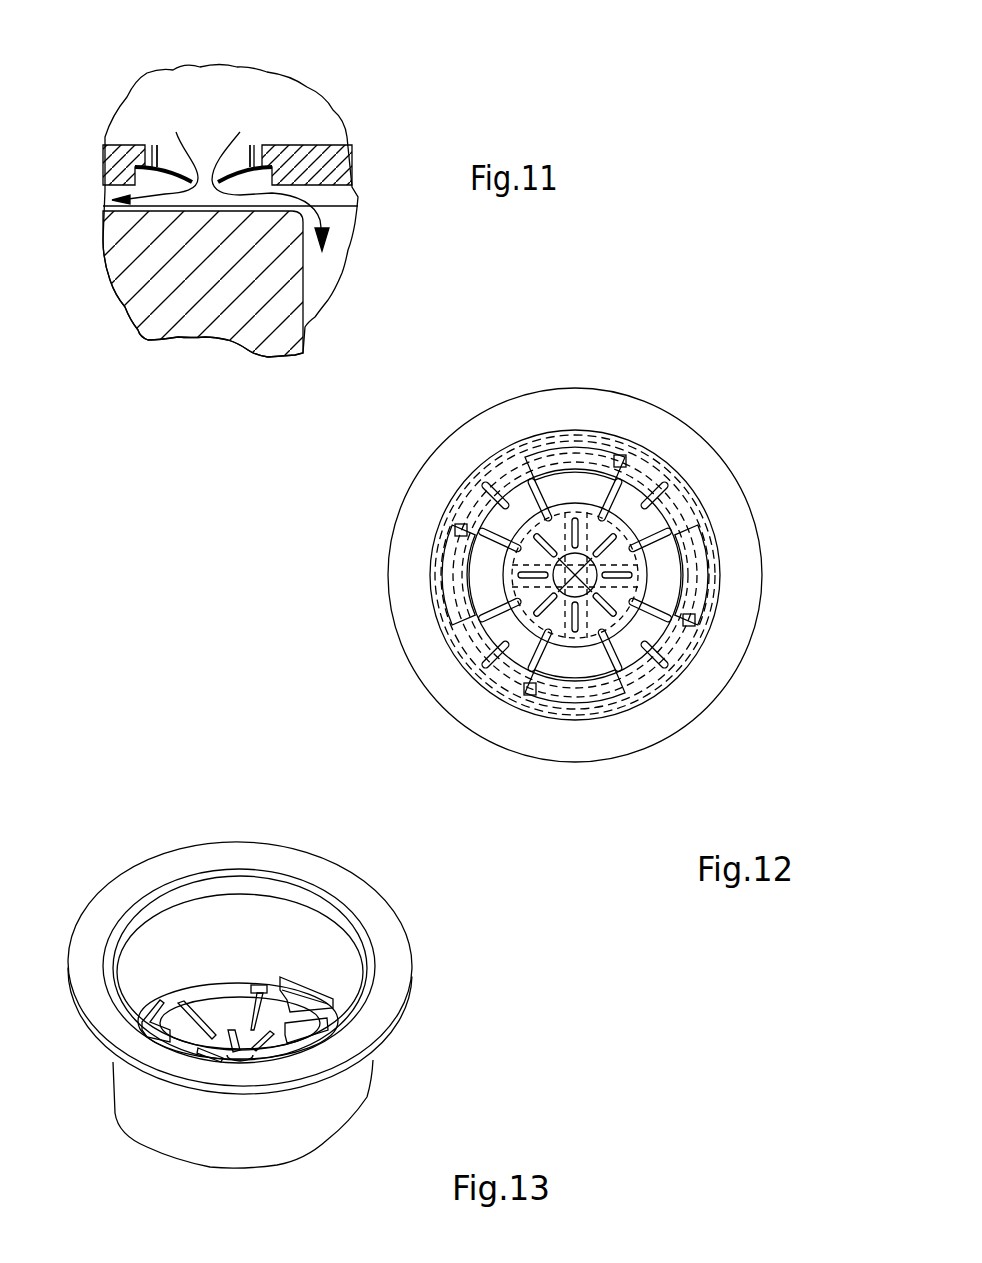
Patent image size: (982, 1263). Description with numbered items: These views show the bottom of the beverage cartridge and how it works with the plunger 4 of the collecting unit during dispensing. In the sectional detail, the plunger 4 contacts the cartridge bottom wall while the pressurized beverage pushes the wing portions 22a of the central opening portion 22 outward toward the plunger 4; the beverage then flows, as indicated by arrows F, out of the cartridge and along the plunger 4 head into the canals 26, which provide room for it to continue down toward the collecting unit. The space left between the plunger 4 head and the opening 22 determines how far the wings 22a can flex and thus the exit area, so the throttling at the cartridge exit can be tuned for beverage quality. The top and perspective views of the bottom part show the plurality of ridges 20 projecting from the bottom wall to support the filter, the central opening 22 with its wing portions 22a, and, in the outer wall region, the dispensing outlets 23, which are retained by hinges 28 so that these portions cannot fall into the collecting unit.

In FIG. 11, the plunger 4 is at (205, 320).
In FIG. 12, the ridges 20 is at (643, 472).
In FIG. 13, the ridges 20 is at (300, 977).
In FIG. 11, the central opening portion 22 is at (172, 176).
In FIG. 12, the central opening portion 22 is at (500, 620).
In FIG. 13, the central opening portion 22 is at (238, 1022).
In FIG. 11, the wing portions 22a is at (333, 173).
In FIG. 12, the wing portions 22a is at (575, 515).
In FIG. 12, the dispensing outlets 23 is at (715, 550).
In FIG. 13, the dispensing outlets 23 is at (217, 993).
In FIG. 11, the canals 26 is at (330, 197).
In FIG. 12, the hinges 28 is at (597, 445).
In FIG. 13, the hinges 28 is at (258, 982).
In FIG. 11, the arrows F is at (180, 125).